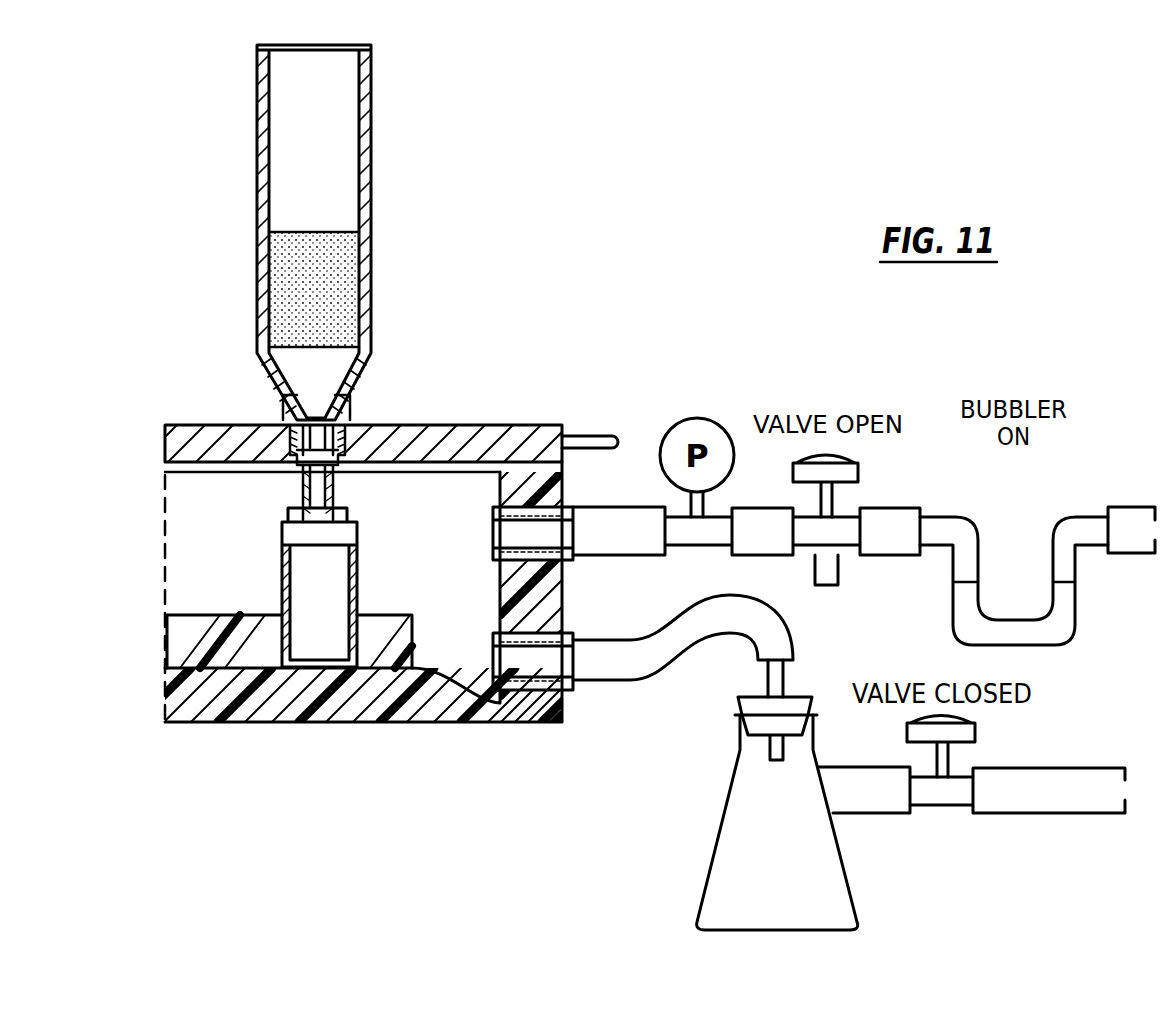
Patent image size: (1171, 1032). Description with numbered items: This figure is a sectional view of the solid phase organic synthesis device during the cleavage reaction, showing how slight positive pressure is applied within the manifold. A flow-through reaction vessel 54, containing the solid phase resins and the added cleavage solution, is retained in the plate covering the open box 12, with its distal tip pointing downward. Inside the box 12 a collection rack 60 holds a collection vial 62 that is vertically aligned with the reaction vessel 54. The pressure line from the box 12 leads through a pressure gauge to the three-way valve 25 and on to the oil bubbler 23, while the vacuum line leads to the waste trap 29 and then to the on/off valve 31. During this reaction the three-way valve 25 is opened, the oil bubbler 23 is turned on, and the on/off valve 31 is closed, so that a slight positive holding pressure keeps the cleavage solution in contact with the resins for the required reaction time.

The box 12 is at (355, 706).
The oil bubbler 23 is at (1033, 637).
The three-way valve 25 is at (858, 470).
The waste trap 29 is at (710, 860).
The on/off valve 31 is at (975, 732).
The flow-through reaction vessel 54 is at (371, 80).
The collection rack 60 is at (382, 618).
The collection vial 62 is at (282, 578).